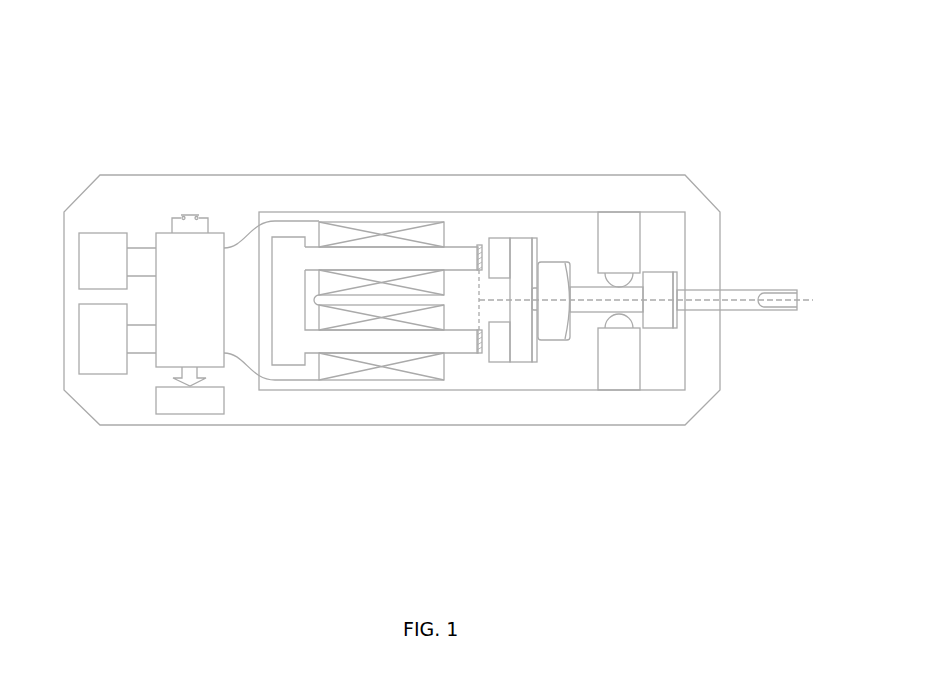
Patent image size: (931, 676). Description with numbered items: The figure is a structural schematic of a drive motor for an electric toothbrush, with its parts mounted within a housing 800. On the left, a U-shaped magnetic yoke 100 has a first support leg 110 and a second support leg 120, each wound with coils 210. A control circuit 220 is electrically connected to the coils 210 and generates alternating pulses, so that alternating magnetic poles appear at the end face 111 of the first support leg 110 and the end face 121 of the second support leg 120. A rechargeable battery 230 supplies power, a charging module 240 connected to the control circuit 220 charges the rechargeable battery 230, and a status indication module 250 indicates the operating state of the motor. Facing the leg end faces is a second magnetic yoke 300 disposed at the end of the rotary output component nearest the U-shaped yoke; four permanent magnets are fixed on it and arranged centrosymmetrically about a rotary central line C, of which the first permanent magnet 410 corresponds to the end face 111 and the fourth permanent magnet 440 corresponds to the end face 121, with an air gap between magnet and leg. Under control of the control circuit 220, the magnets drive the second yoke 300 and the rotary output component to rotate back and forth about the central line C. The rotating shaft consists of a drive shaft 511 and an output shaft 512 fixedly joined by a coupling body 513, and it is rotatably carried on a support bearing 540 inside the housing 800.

The U-shaped magnetic yoke 100 is at (285, 267).
The first support leg 110 is at (442, 253).
The end face 111 is at (479, 258).
The second support leg 120 is at (440, 342).
The end face 121 is at (478, 353).
The coils 210 is at (360, 225).
The control circuit 220 is at (175, 253).
The rechargeable battery 230 is at (107, 253).
The charging module 240 is at (98, 348).
The status indication module 250 is at (190, 400).
The second magnetic yoke 300 is at (518, 263).
The first permanent magnet 410 is at (502, 247).
The fourth permanent magnet 440 is at (500, 350).
The drive shaft 511 is at (605, 293).
The output shaft 512 is at (730, 303).
The coupling body 513 is at (662, 282).
The support bearing 540 is at (557, 273).
The housing 800 is at (598, 413).
The rotary central line C is at (747, 297).